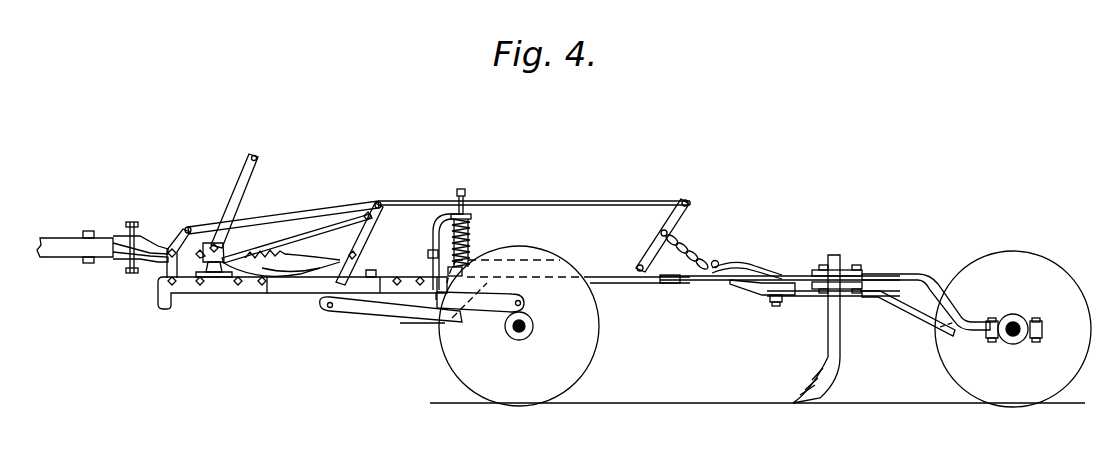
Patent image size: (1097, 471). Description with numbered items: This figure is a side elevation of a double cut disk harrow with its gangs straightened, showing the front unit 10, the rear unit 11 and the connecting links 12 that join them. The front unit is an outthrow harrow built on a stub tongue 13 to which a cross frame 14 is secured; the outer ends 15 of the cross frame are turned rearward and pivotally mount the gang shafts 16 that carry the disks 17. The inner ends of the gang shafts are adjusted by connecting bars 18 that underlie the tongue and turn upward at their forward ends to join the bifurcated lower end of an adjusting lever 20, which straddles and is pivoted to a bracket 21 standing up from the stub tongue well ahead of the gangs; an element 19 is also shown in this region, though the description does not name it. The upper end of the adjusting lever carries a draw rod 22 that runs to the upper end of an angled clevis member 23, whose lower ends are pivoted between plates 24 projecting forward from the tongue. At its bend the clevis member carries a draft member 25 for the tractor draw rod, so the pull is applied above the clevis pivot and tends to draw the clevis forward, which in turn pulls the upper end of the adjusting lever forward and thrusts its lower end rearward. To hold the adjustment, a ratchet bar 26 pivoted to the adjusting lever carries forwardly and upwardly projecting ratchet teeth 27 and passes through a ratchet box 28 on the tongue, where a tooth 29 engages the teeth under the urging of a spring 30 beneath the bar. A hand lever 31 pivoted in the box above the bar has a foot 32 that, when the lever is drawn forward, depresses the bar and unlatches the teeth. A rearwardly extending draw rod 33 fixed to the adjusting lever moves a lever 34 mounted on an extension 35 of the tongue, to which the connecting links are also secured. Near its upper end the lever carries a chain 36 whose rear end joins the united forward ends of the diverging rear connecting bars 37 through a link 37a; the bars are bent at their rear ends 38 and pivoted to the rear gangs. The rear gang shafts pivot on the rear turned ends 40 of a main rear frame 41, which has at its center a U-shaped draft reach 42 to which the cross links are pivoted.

The front unit 10 is at (568, 259).
The rear unit 11 is at (1013, 312).
The connecting links 12 is at (688, 281).
The stub tongue 13 is at (310, 285).
The cross frame 14 is at (368, 313).
The outer ends 15 is at (492, 312).
The gang shafts 16 is at (518, 332).
The disks 17 is at (519, 326).
The connecting bars 18 is at (410, 318).
The spring rod 19 is at (452, 244).
The adjusting lever 20 is at (368, 266).
The bracket 21 is at (353, 263).
The draw rod 22 is at (294, 214).
The angled clevis member 23 is at (178, 237).
The plates 24 is at (227, 293).
The draft member 25 is at (152, 260).
The ratchet bar 26 is at (295, 248).
The ratchet teeth 27 is at (262, 256).
The ratchet box 28 is at (203, 257).
The tooth 29 is at (317, 267).
The spring 30 is at (212, 285).
The hand lever 31 is at (244, 176).
The foot 32 is at (212, 243).
The draw rod 33 is at (553, 204).
The lever 34 is at (685, 218).
The extension 35 is at (615, 283).
The chain 36 is at (700, 249).
The rear connecting bars 37 is at (810, 297).
The link 37a is at (768, 270).
The rear ends 38 is at (922, 308).
The rear turned ends 40 is at (918, 275).
The main rear frame 41 is at (834, 290).
The U-shaped draft reach 42 is at (761, 302).